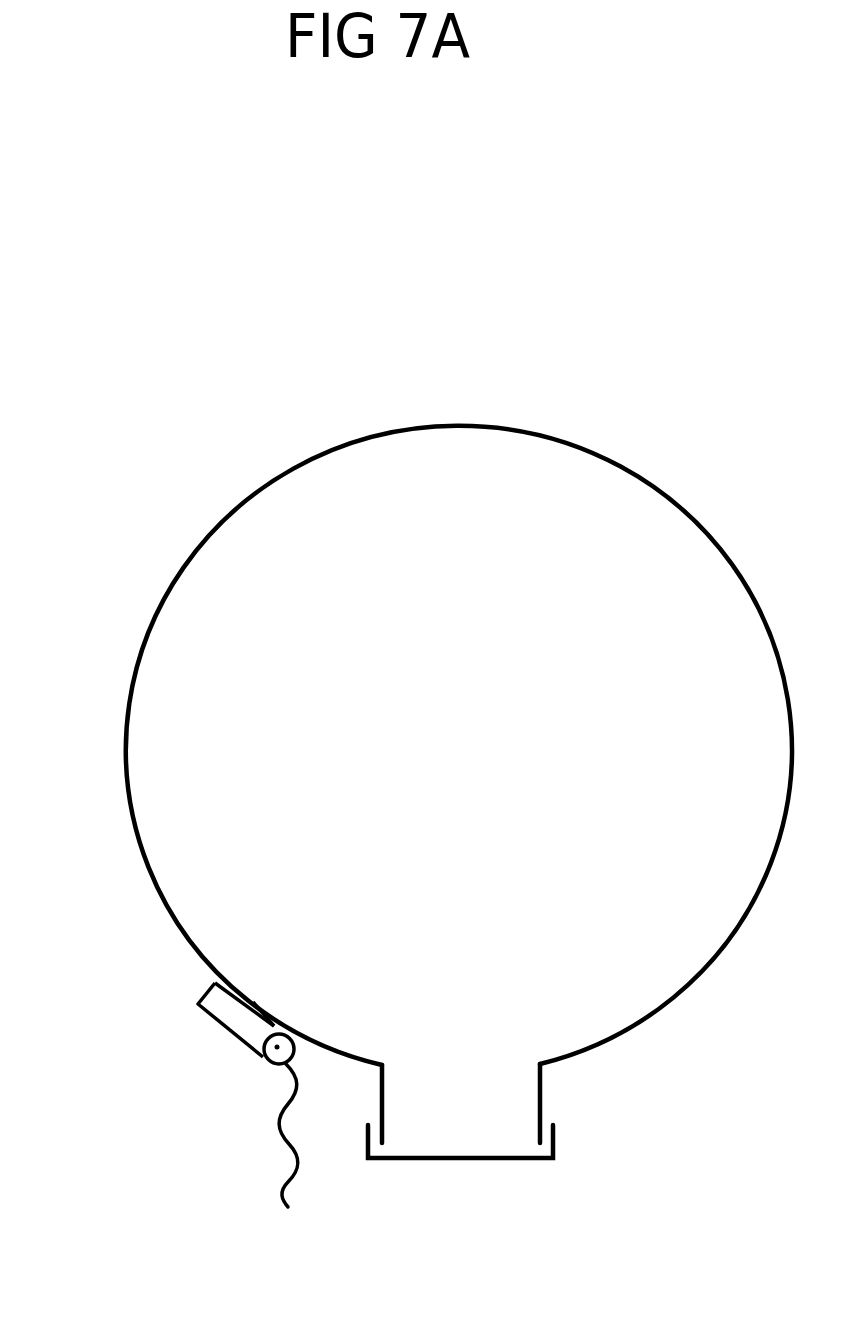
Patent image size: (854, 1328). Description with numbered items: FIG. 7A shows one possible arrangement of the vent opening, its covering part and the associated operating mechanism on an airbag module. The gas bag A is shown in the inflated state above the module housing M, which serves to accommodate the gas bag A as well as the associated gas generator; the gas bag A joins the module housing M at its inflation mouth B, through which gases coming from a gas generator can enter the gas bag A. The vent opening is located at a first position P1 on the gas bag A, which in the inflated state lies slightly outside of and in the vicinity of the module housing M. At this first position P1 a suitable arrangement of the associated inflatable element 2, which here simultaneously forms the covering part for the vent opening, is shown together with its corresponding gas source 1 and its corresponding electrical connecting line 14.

The gas bag A is at (140, 853).
The inflation mouth B is at (541, 1093).
The module housing M is at (392, 1160).
The inflatable element 2 is at (200, 997).
The gas source 1 is at (258, 1066).
The electrical connecting line 14 is at (280, 1165).
The first position P1 is at (253, 1002).